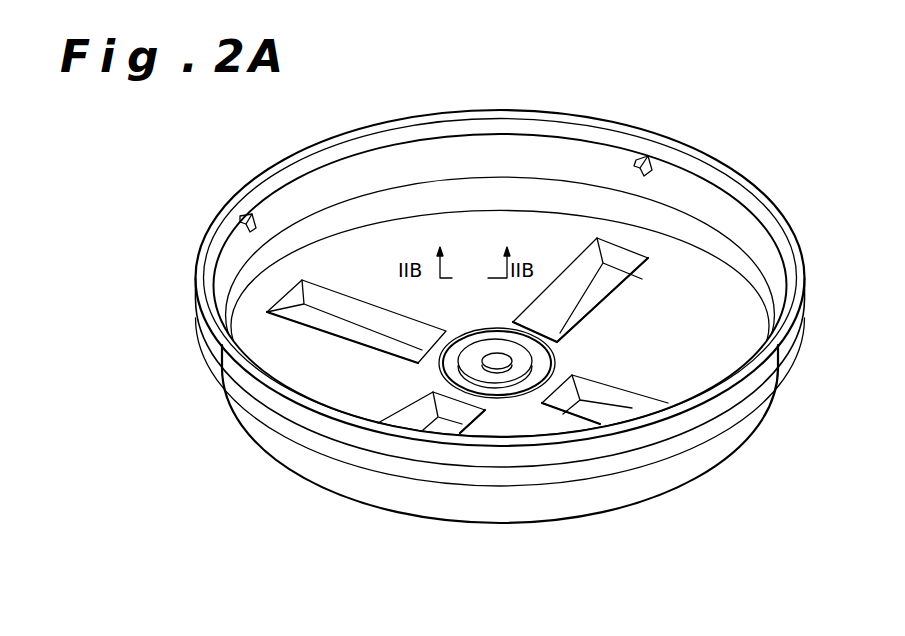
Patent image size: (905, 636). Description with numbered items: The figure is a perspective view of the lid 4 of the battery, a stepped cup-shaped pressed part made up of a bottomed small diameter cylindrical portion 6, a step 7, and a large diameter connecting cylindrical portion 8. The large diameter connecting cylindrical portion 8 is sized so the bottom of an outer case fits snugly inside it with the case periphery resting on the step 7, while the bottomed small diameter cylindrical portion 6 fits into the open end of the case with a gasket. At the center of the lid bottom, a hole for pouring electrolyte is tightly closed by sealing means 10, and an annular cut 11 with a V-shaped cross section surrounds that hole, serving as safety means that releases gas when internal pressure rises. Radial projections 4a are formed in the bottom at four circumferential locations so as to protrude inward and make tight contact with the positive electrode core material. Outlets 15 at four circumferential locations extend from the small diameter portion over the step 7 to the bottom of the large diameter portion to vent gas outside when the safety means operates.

The lid 4 is at (374, 108).
The radial projections 4a is at (330, 318).
The bottomed small diameter cylindrical portion 6 is at (268, 437).
The step 7 is at (232, 262).
The large diameter connecting cylindrical portion 8 is at (212, 343).
The sealing means 10 is at (515, 372).
The annular cut 11 is at (442, 357).
The outlets 15 is at (244, 222).